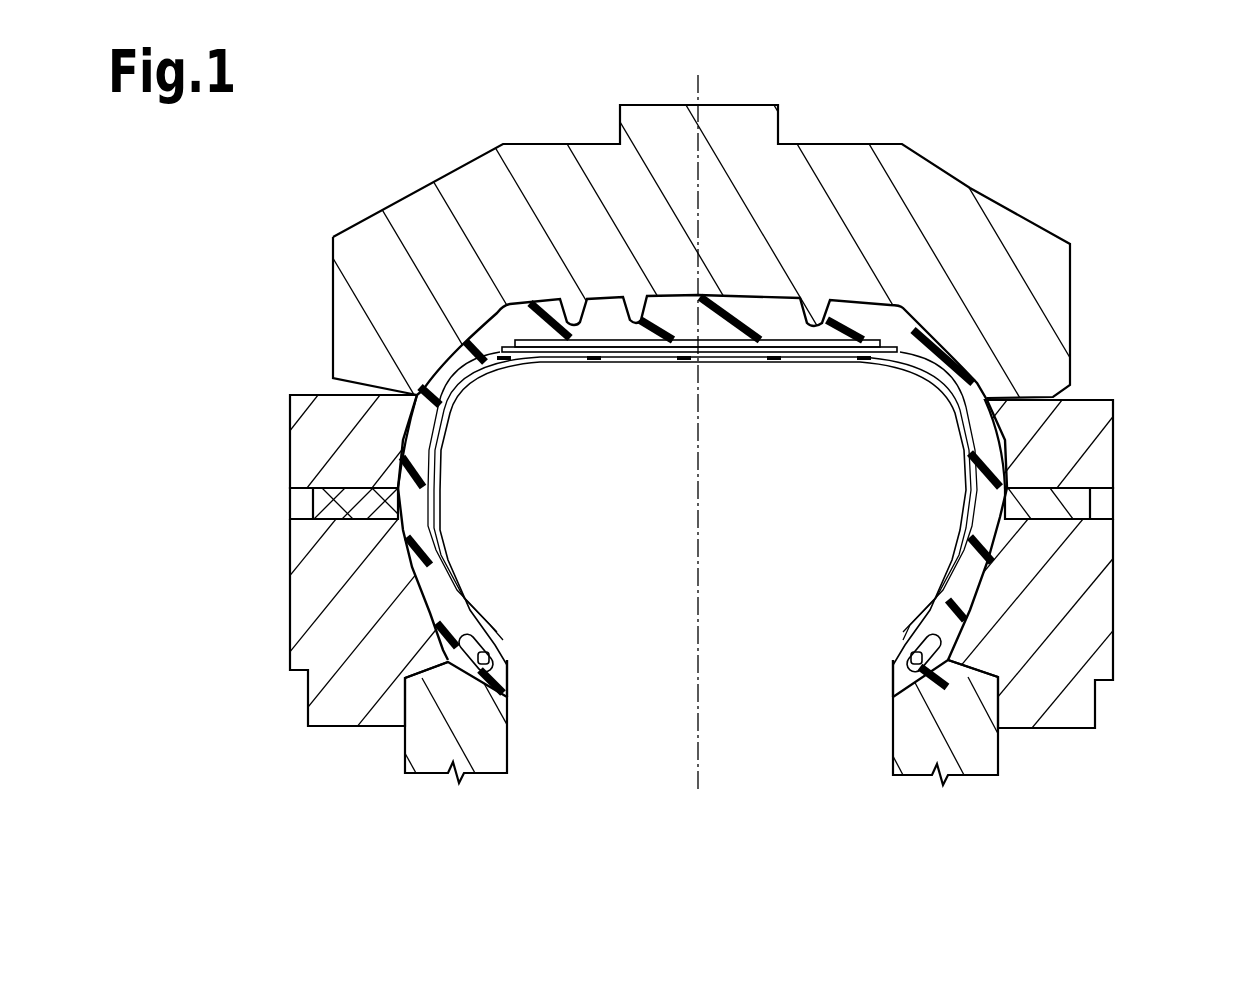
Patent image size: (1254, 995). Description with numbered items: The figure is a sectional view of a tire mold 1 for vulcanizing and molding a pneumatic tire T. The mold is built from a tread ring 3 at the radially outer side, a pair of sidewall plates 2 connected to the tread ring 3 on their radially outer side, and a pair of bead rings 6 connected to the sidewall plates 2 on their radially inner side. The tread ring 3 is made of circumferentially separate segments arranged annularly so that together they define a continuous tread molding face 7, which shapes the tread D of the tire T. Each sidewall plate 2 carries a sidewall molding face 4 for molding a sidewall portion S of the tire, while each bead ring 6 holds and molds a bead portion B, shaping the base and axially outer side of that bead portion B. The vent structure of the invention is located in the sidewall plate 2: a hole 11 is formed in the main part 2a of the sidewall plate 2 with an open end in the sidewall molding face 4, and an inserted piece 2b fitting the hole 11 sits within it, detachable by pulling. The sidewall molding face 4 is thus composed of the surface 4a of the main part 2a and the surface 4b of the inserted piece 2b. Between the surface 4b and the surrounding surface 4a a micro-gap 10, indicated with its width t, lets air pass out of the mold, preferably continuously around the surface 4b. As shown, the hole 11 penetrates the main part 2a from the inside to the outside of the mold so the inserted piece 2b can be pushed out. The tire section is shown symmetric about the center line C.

The tire mold 1 is at (918, 140).
The sidewall plate 2 is at (692, 561).
The main part of the sidewall plate 2a is at (315, 455).
The inserted piece 2b is at (328, 504).
The tread ring 3 is at (447, 168).
The sidewall molding face 4 is at (701, 482).
The surface of the main part 4a is at (413, 423).
The surface of the inserted piece 4b is at (400, 504).
The bead ring 6 is at (487, 735).
The tread molding face 7 is at (775, 300).
The micro-gap 10 is at (1030, 487).
The hole 11 is at (335, 536).
The tire equator center line C is at (697, 418).
The tread D is at (858, 313).
The pneumatic tire T is at (703, 427).
The gap width t is at (398, 462).
The sidewall portion S is at (418, 567).
The bead portion B is at (447, 652).